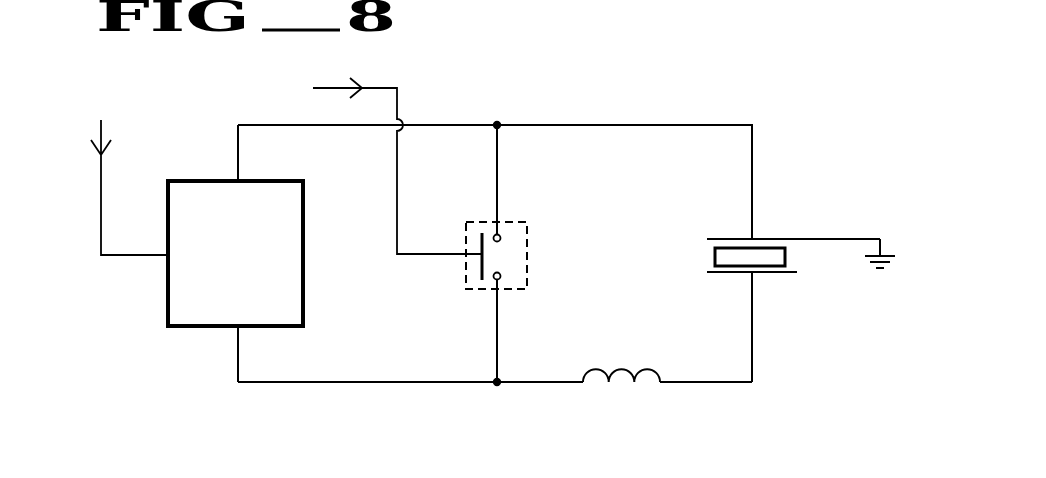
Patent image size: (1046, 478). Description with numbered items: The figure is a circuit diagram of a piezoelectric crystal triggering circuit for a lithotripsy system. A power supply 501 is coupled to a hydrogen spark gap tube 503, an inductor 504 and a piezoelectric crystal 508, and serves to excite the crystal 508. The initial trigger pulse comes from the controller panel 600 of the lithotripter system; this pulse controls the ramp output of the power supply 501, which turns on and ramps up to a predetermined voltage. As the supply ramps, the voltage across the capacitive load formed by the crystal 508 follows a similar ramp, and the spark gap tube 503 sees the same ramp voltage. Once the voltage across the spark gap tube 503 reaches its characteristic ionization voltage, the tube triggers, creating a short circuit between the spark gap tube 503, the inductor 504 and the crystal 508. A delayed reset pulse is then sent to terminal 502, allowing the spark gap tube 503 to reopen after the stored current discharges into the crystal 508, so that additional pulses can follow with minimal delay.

The power supply 501 is at (221, 301).
The terminal 502 is at (478, 259).
The hydrogen spark gap tube 503 is at (522, 236).
The inductor 504 is at (613, 384).
The piezoelectric crystal 508 is at (798, 252).
The controller panel 600 is at (114, 161).